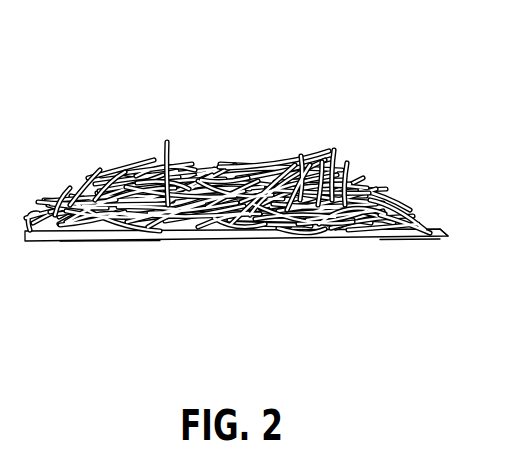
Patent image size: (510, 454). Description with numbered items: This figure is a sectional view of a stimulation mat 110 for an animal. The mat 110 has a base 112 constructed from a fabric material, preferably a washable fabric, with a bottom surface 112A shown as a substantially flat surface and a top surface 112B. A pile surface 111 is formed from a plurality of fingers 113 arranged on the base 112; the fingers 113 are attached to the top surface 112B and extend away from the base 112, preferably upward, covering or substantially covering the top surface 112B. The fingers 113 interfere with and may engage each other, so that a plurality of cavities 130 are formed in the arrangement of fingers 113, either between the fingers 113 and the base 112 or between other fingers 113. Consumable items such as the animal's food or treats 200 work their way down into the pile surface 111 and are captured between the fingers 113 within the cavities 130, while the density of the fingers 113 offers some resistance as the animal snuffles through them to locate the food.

The stimulation mat 110 is at (276, 91).
The pile surface 111 is at (31, 241).
The base 112 is at (112, 241).
The bottom surface 112A is at (410, 245).
The top surface 112B is at (442, 233).
The fingers 113 is at (167, 141).
The cavities 130 is at (220, 241).
The treats 200 is at (170, 241).